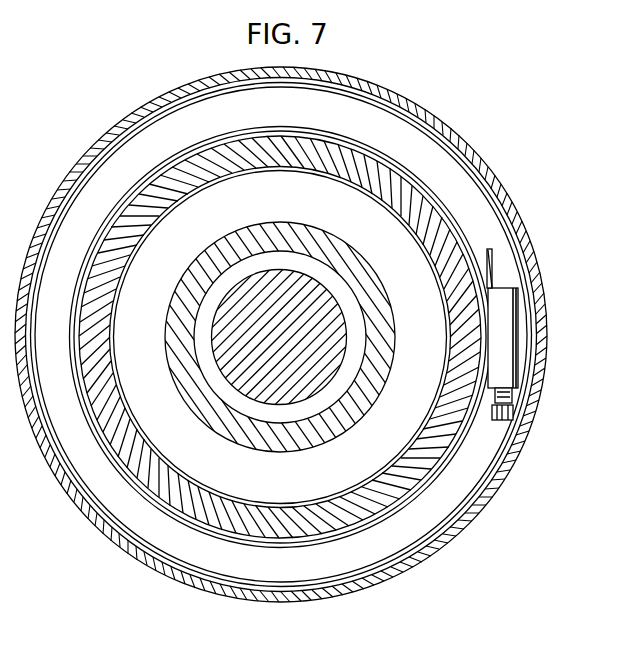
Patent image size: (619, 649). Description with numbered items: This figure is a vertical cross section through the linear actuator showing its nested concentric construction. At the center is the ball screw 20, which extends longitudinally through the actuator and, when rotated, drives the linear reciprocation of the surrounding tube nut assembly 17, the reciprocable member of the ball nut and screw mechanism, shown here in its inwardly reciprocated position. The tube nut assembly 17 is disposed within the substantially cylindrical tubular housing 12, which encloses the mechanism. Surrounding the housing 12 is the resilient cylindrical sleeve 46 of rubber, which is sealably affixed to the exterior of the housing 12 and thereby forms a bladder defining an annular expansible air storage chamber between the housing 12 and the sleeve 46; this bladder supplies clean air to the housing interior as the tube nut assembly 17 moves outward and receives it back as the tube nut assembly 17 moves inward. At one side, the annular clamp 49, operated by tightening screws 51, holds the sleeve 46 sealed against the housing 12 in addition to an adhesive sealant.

The cylindrical sleeve 46 is at (317, 576).
The tubular housing 12 is at (358, 494).
The tube nut assembly 17 is at (277, 435).
The ball screw 20 is at (238, 371).
The annular clamp 49 is at (507, 369).
The tightening screws 51 is at (496, 421).